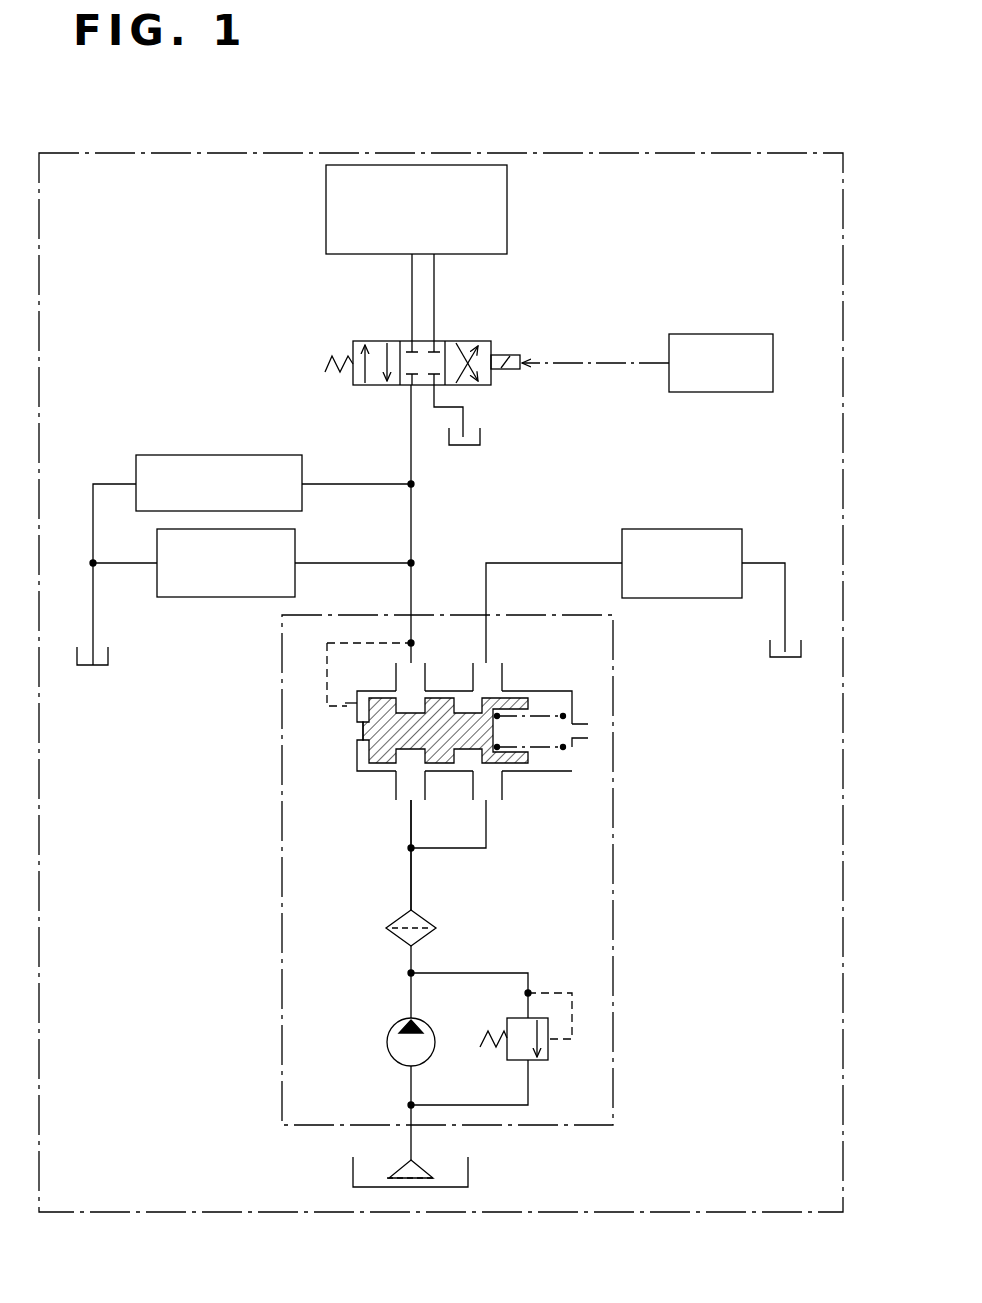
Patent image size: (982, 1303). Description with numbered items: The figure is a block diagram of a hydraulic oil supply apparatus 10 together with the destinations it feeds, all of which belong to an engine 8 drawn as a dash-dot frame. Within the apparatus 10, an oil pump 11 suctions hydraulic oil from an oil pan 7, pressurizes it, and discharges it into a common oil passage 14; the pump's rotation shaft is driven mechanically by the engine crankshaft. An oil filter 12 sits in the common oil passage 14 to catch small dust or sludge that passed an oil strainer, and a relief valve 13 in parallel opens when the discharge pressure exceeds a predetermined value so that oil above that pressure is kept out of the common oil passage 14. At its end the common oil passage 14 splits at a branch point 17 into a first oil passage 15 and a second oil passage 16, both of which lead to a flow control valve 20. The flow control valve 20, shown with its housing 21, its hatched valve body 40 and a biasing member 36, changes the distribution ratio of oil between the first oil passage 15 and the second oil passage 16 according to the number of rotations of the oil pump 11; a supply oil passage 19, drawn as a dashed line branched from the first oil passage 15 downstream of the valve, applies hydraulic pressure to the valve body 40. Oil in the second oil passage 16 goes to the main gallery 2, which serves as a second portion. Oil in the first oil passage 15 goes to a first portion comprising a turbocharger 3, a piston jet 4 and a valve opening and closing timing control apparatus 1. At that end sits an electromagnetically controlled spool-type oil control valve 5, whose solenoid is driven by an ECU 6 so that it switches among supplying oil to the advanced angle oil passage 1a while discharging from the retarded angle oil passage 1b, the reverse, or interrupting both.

The valve opening and closing timing control apparatus 1 is at (509, 212).
The advanced angle oil passage 1a is at (411, 285).
The retarded angle oil passage 1b is at (435, 295).
The main gallery 2 is at (683, 529).
The turbocharger 3 is at (222, 597).
The piston jet 4 is at (221, 455).
The oil control valve 5 is at (354, 343).
The ECU 6 is at (722, 334).
The oil pan 7 is at (468, 1172).
The engine 8 is at (553, 152).
The hydraulic oil supply apparatus 10 is at (614, 909).
The oil pump 11 is at (387, 1042).
The oil filter 12 is at (396, 940).
The relief valve 13 is at (548, 1055).
The common oil passage 14 is at (413, 880).
The first oil passage 15 is at (410, 811).
The second oil passage 16 is at (488, 823).
The branch point 17 is at (409, 849).
The supply oil passage 19 is at (326, 680).
The flow control valve 20 is at (417, 724).
The housing 21 is at (537, 690).
The biasing member 36 is at (537, 748).
The valve body 40 is at (383, 763).